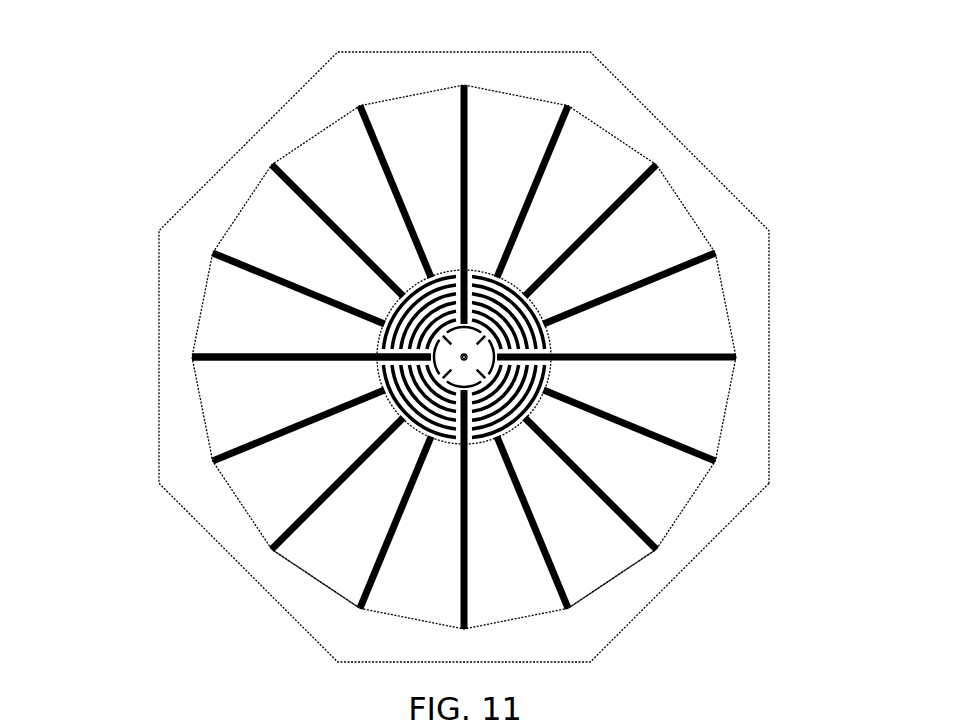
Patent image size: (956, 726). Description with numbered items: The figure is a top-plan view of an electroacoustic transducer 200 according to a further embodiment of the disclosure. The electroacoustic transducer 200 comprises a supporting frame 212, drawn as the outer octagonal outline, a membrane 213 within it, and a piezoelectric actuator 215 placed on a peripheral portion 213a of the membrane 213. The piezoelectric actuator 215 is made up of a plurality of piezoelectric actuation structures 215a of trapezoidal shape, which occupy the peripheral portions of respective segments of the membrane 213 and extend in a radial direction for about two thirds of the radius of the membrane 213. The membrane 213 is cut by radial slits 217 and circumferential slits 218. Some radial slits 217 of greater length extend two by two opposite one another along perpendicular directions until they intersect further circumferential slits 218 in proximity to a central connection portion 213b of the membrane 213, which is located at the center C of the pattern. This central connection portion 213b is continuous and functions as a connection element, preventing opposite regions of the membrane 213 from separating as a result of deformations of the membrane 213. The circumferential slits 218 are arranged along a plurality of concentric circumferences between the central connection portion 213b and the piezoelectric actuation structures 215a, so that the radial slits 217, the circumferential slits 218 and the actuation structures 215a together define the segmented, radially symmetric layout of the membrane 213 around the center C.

The electroacoustic transducer 200 is at (446, 333).
The supporting frame 212 is at (340, 70).
The membrane 213 is at (454, 316).
The peripheral portion 213a is at (272, 368).
The central connection portion 213b is at (478, 356).
The piezoelectric actuator 215 is at (203, 277).
The piezoelectric actuation structures 215a is at (337, 548).
The radial slits 217 is at (398, 173).
The circumferential slits 218 is at (522, 320).
The center point C is at (462, 358).